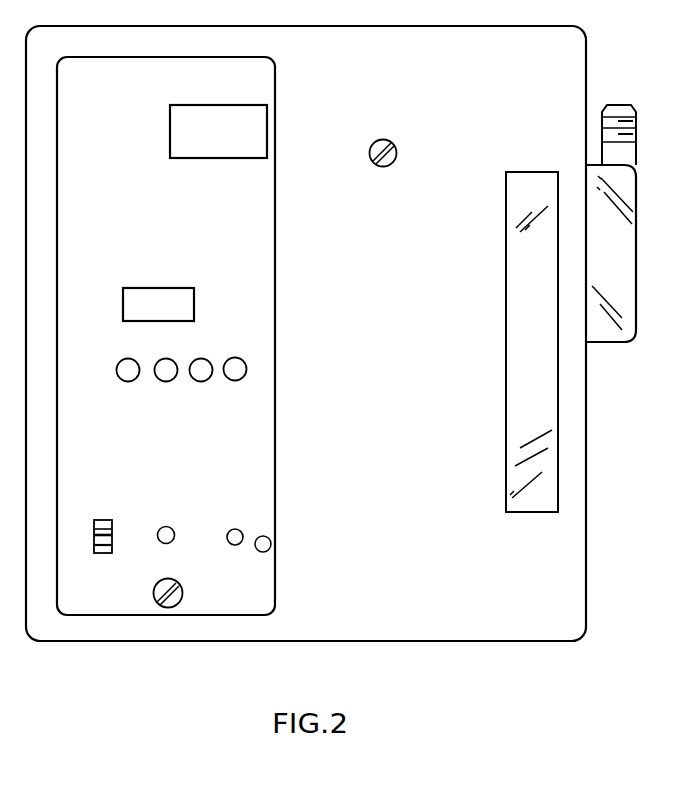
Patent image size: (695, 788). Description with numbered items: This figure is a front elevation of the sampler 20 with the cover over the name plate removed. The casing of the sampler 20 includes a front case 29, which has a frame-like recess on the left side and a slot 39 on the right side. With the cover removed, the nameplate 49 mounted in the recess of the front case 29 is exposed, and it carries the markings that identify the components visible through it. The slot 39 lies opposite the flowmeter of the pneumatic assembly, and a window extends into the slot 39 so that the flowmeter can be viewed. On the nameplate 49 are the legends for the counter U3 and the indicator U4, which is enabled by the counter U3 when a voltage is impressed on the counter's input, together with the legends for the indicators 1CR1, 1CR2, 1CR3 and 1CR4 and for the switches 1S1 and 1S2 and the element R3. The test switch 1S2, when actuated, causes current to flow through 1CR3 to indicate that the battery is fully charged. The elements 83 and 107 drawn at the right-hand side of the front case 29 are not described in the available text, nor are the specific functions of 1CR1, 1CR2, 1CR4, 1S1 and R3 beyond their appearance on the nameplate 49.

The sampler 20 is at (365, 616).
The front case 29 is at (461, 26).
The nameplate 49 is at (264, 222).
The slot 39 is at (513, 196).
The side bracket 83 is at (637, 228).
The knob 107 is at (628, 133).
The counter U3 is at (232, 147).
The indicator U4 is at (170, 316).
The indicator lamp 1CR1 is at (170, 358).
The indicator lamp 1CR2 is at (194, 380).
The indicator 1CR3 is at (121, 380).
The indicator lamp 1CR4 is at (236, 358).
The switch 1S1 is at (101, 521).
The test switch 1S2 is at (164, 527).
The potentiometer R3 is at (234, 530).